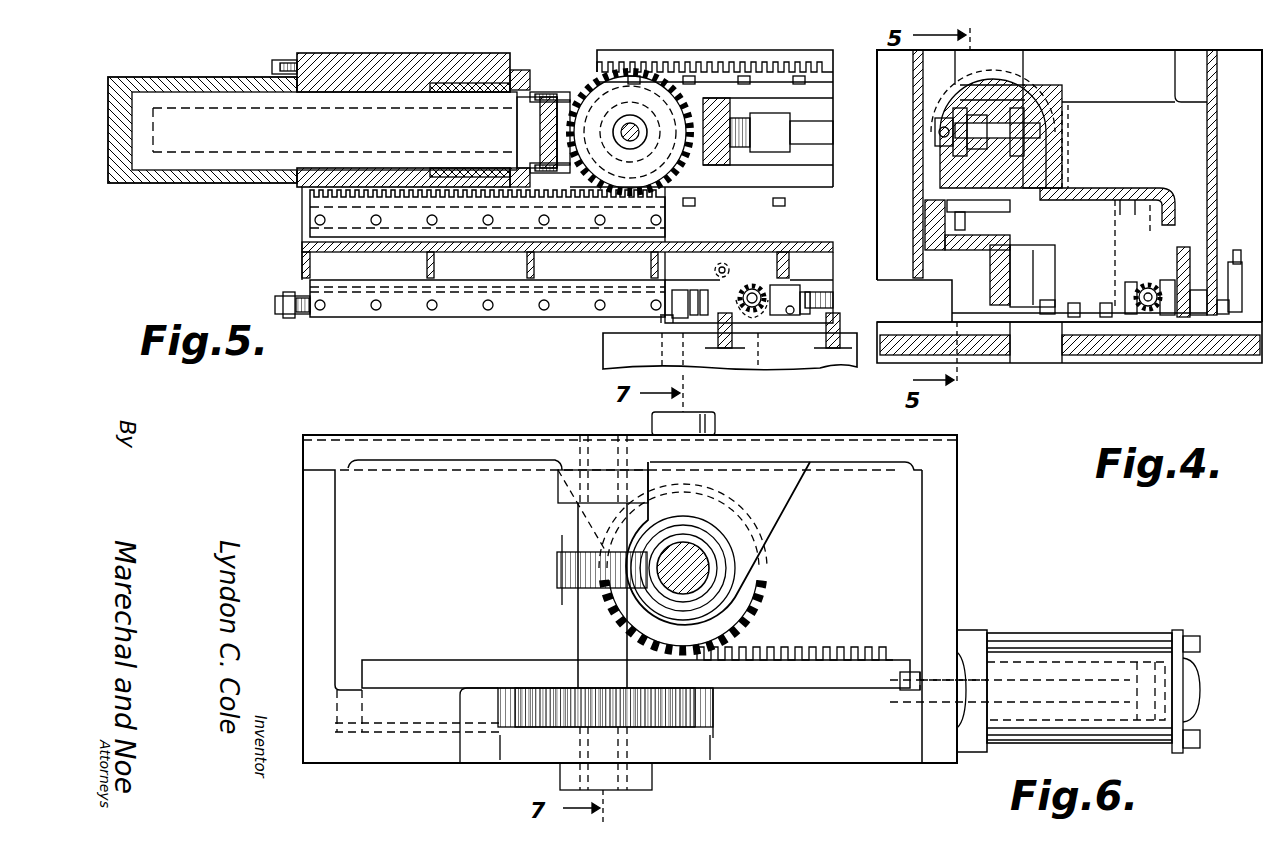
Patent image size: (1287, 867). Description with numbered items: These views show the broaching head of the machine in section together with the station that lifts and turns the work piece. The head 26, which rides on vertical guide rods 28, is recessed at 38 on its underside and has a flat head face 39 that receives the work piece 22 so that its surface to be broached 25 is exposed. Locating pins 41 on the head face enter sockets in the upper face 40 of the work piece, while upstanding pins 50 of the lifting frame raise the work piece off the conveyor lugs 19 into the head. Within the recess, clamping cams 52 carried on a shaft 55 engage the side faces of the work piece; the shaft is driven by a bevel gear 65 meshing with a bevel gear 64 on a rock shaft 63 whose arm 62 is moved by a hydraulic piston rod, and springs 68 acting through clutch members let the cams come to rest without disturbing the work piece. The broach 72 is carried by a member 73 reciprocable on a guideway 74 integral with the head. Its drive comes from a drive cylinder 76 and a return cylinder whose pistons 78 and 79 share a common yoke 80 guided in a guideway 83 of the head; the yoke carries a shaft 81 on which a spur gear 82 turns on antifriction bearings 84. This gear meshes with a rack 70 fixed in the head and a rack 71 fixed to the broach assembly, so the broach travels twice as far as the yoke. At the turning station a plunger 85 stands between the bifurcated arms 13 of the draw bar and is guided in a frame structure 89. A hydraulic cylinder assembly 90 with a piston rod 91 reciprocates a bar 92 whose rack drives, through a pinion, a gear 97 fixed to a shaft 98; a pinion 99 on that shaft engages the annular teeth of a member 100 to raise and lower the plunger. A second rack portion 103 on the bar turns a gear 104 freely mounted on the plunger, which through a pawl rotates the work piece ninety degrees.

In FIG. 5, the bifurcated portion 13 is at (722, 348).
In FIG. 5, the work contacting lugs 19 is at (718, 335).
In FIG. 4, the work piece 22 is at (1115, 240).
In FIG. 4, the surface to be broached 25 is at (1048, 310).
In FIG. 5, the head 26 is at (426, 57).
In FIG. 4, the guide rods 28 is at (903, 302).
In FIG. 4, the recess 38 is at (1165, 220).
In FIG. 5, the head face 39 is at (690, 200).
In FIG. 4, the head face 39 is at (1079, 214).
In FIG. 4, the upper face of the work piece 40 is at (1105, 198).
In FIG. 5, the locating pins 41 is at (782, 200).
In FIG. 4, the locating pins 41 is at (1132, 212).
In FIG. 5, the upstanding pins 50 is at (665, 320).
In FIG. 4, the upstanding pins 50 is at (1106, 305).
In FIG. 5, the cams 52 is at (693, 300).
In FIG. 4, the cams 52 is at (1130, 318).
In FIG. 5, the shaft 55 is at (722, 263).
In FIG. 4, the shaft 55 is at (1148, 290).
In FIG. 5, the arm 62 is at (752, 286).
In FIG. 4, the arm 62 is at (1237, 255).
In FIG. 5, the rock shaft 63 is at (765, 288).
In FIG. 4, the rock shaft 63 is at (1220, 320).
In FIG. 5, the bevel gear 64 is at (750, 322).
In FIG. 4, the bevel gear 64 is at (1170, 320).
In FIG. 5, the bevel gear 65 is at (770, 318).
In FIG. 4, the bevel gear 65 is at (1185, 260).
In FIG. 5, the springs 68 is at (828, 300).
In FIG. 5, the rack 70 is at (816, 60).
In FIG. 4, the rack 70 is at (993, 60).
In FIG. 5, the rack 71 is at (318, 204).
In FIG. 4, the rack 71 is at (960, 203).
In FIG. 4, the broach 72 is at (1048, 262).
In FIG. 4, the broach carrying member 73 is at (1012, 307).
In FIG. 5, the guideway 74 is at (405, 277).
In FIG. 4, the guideway 74 is at (990, 260).
In FIG. 5, the drive cylinder 76 is at (218, 77).
In FIG. 5, the piston 78 is at (207, 163).
In FIG. 5, the piston 79 is at (828, 136).
In FIG. 5, the yoke 80 is at (716, 98).
In FIG. 4, the yoke 80 is at (1048, 110).
In FIG. 5, the shaft 81 is at (622, 130).
In FIG. 4, the shaft 81 is at (1040, 128).
In FIG. 5, the spur gear 82 is at (596, 80).
In FIG. 4, the spur gear 82 is at (1022, 82).
In FIG. 5, the guideway 83 is at (762, 100).
In FIG. 4, the guideway 83 is at (1055, 140).
In FIG. 4, the antifriction bearings 84 is at (950, 112).
In FIG. 6, the plunger 85 is at (698, 568).
In FIG. 6, the frame structure 89 is at (538, 440).
In FIG. 6, the hydraulic cylinder assembly 90 is at (1048, 665).
In FIG. 6, the piston rod 91 is at (938, 672).
In FIG. 6, the bar 92 is at (853, 655).
In FIG. 6, the gear 97 is at (548, 690).
In FIG. 6, the shaft 98 is at (592, 616).
In FIG. 6, the pinion 99 is at (560, 565).
In FIG. 6, the member 100 is at (702, 545).
In FIG. 6, the second rack portion 103 is at (785, 650).
In FIG. 6, the gear 104 is at (752, 593).